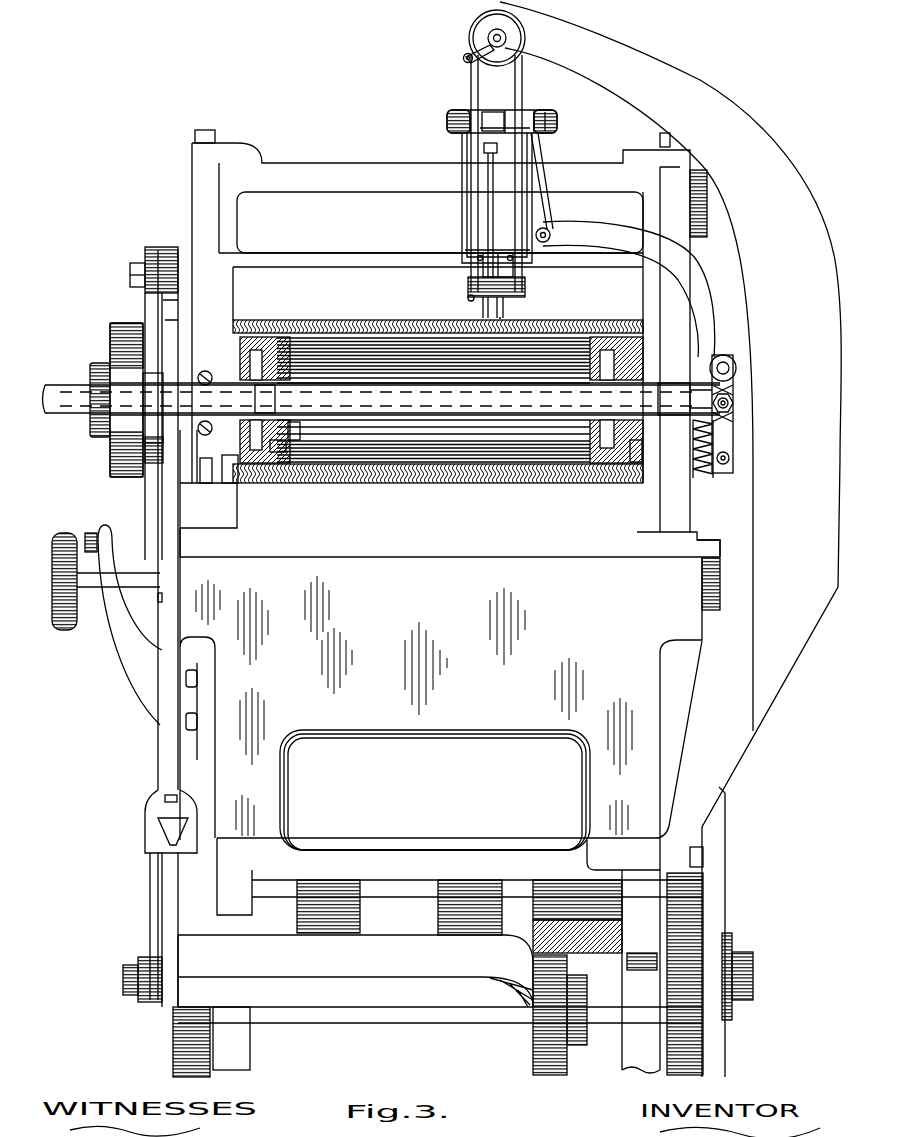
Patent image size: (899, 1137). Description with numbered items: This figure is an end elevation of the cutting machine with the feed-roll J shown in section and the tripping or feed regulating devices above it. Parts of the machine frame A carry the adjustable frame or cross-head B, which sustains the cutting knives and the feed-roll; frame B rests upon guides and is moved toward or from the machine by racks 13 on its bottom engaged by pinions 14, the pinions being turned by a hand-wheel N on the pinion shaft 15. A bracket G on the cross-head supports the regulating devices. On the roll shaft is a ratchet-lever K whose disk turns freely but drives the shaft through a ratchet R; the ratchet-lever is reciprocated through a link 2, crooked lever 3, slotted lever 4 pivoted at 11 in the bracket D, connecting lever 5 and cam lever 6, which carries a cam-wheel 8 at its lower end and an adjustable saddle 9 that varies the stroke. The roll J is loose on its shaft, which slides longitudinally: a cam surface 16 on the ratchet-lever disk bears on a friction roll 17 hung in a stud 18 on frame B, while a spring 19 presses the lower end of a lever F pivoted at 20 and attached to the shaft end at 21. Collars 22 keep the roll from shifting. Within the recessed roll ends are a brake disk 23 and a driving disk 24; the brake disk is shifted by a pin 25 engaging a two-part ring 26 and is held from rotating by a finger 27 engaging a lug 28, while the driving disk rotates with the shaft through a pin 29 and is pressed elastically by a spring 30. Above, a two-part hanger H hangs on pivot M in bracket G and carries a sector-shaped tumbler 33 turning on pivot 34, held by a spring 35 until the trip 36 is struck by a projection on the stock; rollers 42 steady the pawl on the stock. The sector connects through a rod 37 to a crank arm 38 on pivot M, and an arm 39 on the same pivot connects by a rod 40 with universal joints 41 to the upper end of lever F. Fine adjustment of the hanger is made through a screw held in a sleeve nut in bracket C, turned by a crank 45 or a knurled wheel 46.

The link 2 is at (138, 266).
The crooked lever 3 is at (166, 264).
The slotted lever 4 is at (150, 512).
The connecting lever 5 is at (178, 541).
The cam lever 6 is at (176, 955).
The cam-wheel 8 is at (140, 962).
The saddle 9 is at (145, 816).
The pivot of slotted lever 11 is at (87, 538).
The racks 13 is at (721, 552).
The pinions 14 is at (722, 606).
The pinion shaft 15 is at (135, 587).
The cam surface 16 is at (140, 478).
The friction roll 17 is at (158, 342).
The stud 18 is at (178, 320).
The spring 19 is at (712, 478).
The pivot of lever F 20 is at (737, 365).
The shaft attachment 21 is at (736, 404).
The sleeves or collars 22 is at (290, 427).
The brake disk 23 is at (242, 353).
The driving disk 24 is at (641, 337).
The pin 25 is at (267, 399).
The ring 26 is at (282, 447).
The projecting finger 27 is at (210, 483).
The lug 28 is at (230, 483).
The pin 29 is at (629, 358).
The spring 30 is at (616, 441).
The sector-shaped tumbler 33 is at (498, 255).
The pivot 34 is at (468, 285).
The spring 35 is at (467, 299).
The trip 36 is at (503, 313).
The rod 37 is at (493, 192).
The crank arm 38 is at (492, 112).
The arm 39 is at (545, 112).
The rod 40 is at (552, 152).
The universal joint 41 is at (547, 229).
The rollers 42 is at (483, 312).
The crank 45 is at (463, 60).
The knurled wheel 46 is at (480, 22).
The frame A is at (441, 736).
The adjustable frame or cross-head B is at (450, 343).
The bracket C is at (670, 539).
The bracket D is at (130, 625).
The lever F is at (706, 285).
The bracket G is at (462, 215).
The hanger H is at (471, 88).
The feed-roll J is at (382, 396).
The ratchet-lever K is at (130, 310).
The pivot M is at (447, 122).
The hand-wheel N is at (64, 596).
The ratchet R is at (90, 380).